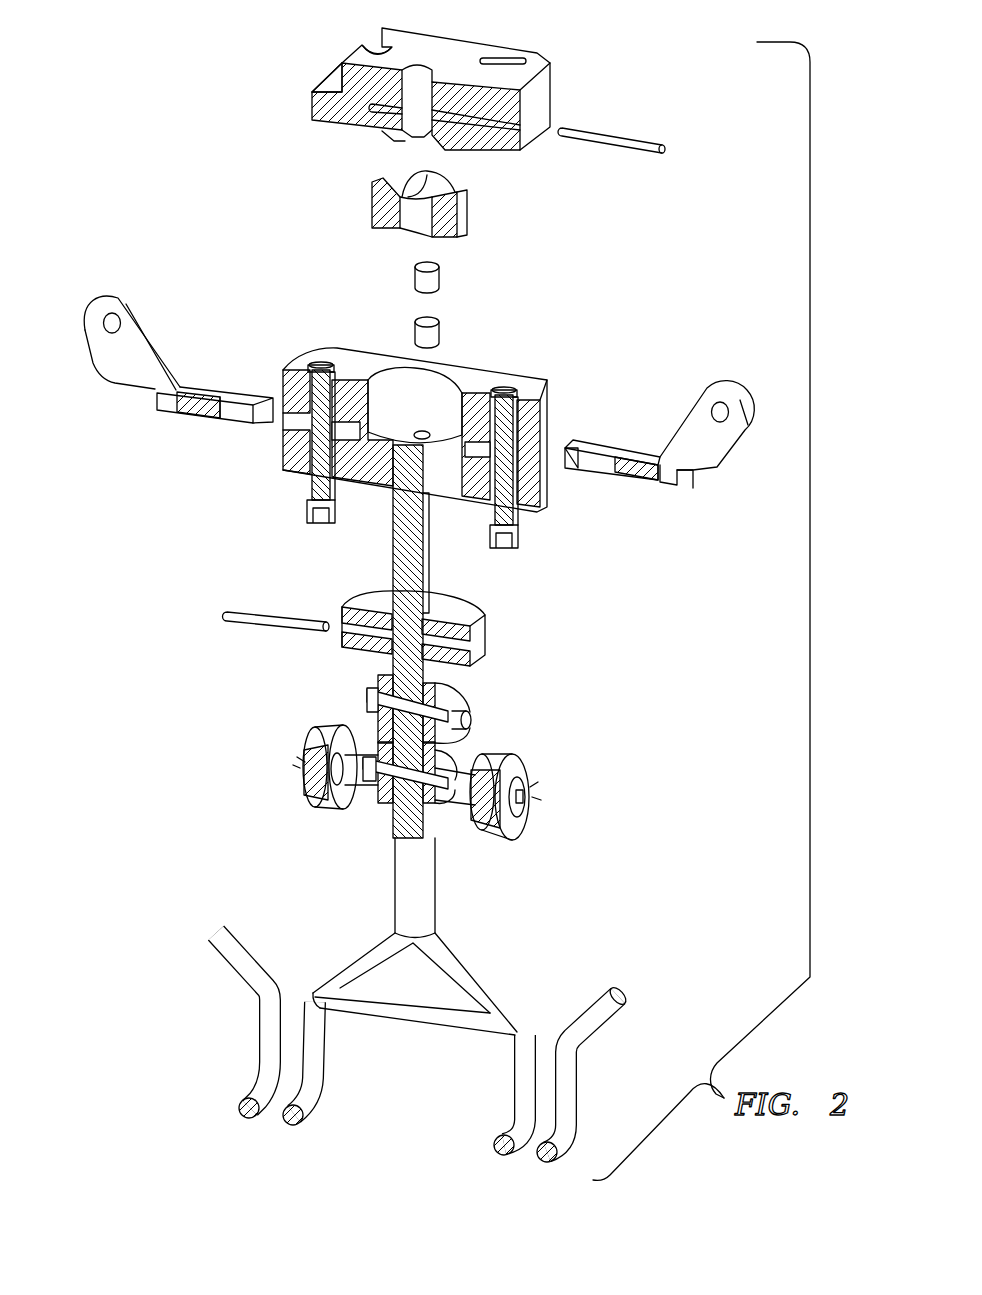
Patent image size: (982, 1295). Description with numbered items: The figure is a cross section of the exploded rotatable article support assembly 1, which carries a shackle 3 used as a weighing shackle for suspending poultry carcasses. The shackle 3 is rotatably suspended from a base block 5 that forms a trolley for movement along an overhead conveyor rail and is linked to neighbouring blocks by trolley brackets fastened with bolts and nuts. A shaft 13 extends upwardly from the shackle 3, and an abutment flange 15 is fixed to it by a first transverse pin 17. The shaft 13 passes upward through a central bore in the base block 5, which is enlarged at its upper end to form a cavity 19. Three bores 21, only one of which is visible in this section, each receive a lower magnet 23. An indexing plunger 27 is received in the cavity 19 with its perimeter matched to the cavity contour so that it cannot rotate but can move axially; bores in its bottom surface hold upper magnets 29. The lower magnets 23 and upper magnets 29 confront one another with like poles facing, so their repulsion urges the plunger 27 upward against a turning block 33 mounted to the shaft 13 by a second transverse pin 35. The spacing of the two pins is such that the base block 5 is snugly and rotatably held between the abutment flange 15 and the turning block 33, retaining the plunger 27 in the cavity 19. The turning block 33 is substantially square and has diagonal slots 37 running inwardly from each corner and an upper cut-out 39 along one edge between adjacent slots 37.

The rotatable article support assembly 1 is at (702, 253).
The shackle 3 is at (395, 877).
The base block 5 is at (432, 411).
The shaft 13 is at (392, 547).
The abutment flange 15 is at (453, 605).
The first transverse pin 17 is at (273, 633).
The cavity 19 is at (400, 395).
The bore 21 is at (425, 435).
The lower magnet 23 is at (442, 332).
The indexing plunger 27 is at (367, 212).
The upper magnet 29 is at (442, 276).
The turning block 33 is at (467, 52).
The second transverse pin 35 is at (607, 133).
The diagonal slot 37 is at (386, 45).
The upper cut-out 39 is at (330, 83).